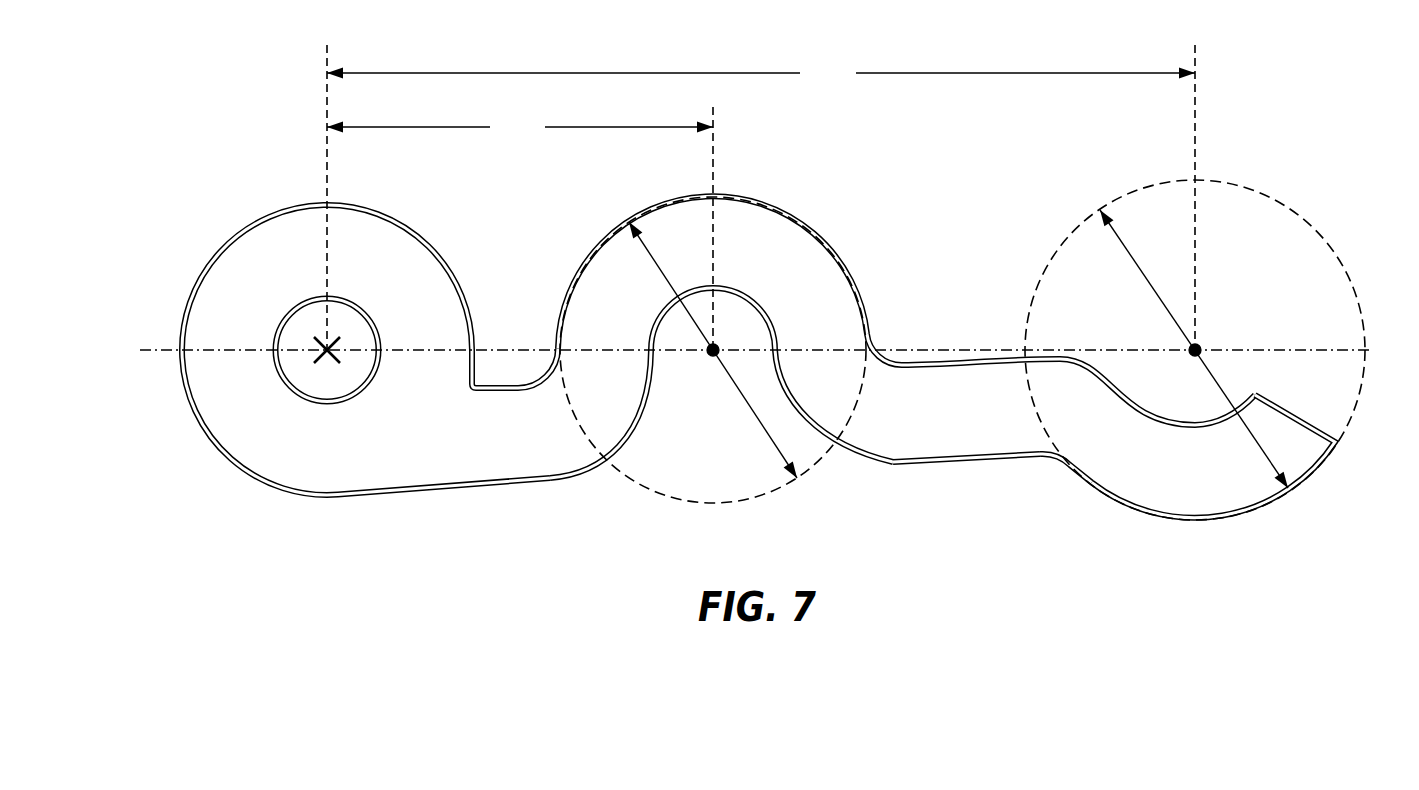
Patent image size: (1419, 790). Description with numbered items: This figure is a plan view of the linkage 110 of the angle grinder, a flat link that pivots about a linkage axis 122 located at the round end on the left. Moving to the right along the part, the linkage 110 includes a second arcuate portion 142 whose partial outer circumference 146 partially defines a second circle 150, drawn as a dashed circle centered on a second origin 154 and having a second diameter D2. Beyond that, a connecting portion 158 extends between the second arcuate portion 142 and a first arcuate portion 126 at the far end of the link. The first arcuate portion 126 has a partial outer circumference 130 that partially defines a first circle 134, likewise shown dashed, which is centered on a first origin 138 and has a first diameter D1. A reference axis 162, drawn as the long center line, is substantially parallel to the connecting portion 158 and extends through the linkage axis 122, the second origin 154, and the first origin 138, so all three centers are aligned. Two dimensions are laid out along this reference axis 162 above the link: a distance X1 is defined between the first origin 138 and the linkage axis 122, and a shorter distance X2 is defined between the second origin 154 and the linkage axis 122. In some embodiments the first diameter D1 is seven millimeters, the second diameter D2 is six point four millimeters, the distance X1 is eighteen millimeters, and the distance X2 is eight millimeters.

The linkage 110 is at (758, 371).
The linkage axis 122 is at (330, 362).
The first arcuate portion 126 is at (1188, 465).
The partial outer circumference 130 is at (1240, 515).
The first circle 134 is at (1113, 202).
The first origin 138 is at (1202, 342).
The second arcuate portion 142 is at (696, 318).
The partial outer circumference 146 is at (670, 200).
The second circle 150 is at (750, 503).
The second origin 154 is at (711, 353).
The connecting portion 158 is at (970, 420).
The reference axis 162 is at (928, 352).
The first diameter D1 is at (1142, 272).
The second diameter D2 is at (660, 270).
The distance X1 is at (761, 72).
The distance X2 is at (520, 126).